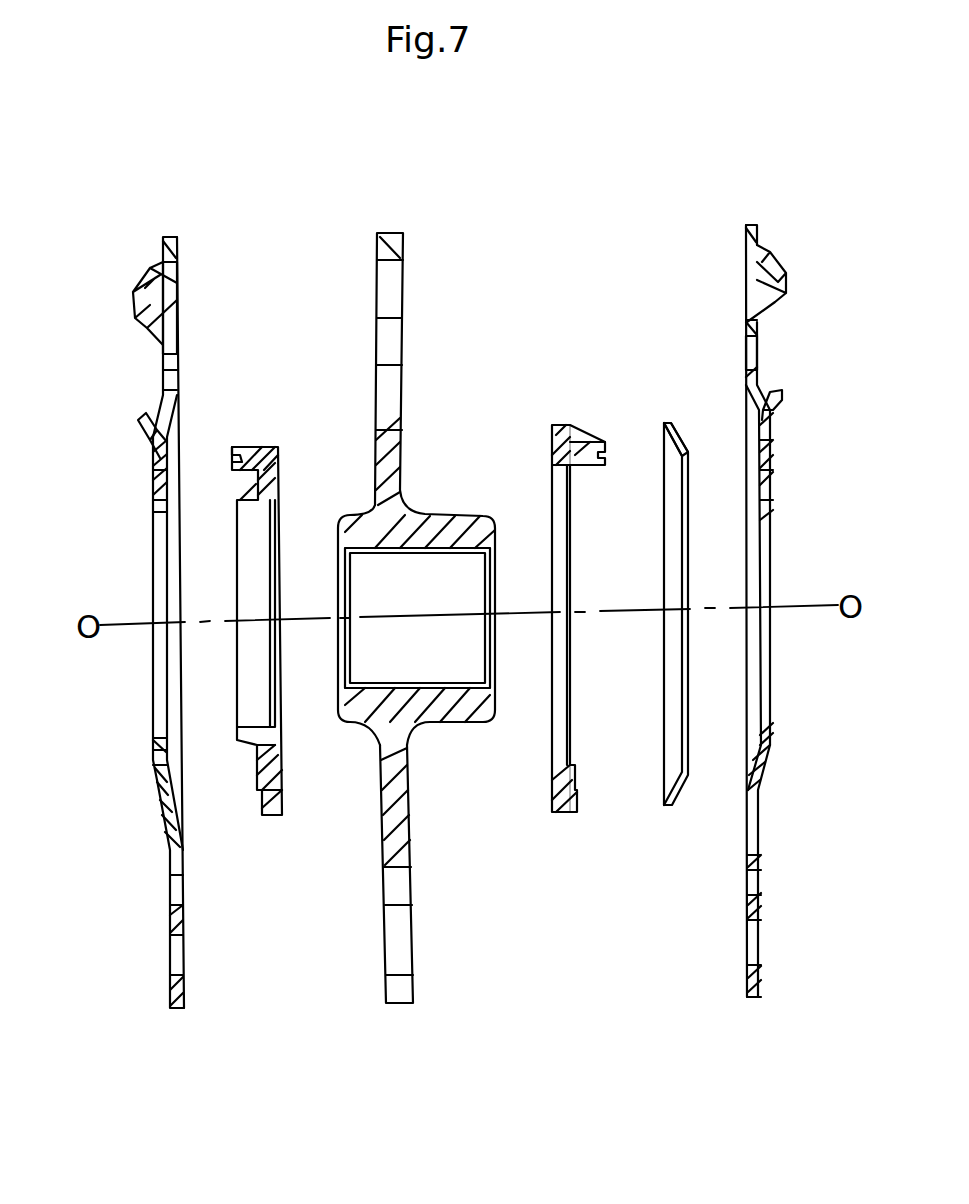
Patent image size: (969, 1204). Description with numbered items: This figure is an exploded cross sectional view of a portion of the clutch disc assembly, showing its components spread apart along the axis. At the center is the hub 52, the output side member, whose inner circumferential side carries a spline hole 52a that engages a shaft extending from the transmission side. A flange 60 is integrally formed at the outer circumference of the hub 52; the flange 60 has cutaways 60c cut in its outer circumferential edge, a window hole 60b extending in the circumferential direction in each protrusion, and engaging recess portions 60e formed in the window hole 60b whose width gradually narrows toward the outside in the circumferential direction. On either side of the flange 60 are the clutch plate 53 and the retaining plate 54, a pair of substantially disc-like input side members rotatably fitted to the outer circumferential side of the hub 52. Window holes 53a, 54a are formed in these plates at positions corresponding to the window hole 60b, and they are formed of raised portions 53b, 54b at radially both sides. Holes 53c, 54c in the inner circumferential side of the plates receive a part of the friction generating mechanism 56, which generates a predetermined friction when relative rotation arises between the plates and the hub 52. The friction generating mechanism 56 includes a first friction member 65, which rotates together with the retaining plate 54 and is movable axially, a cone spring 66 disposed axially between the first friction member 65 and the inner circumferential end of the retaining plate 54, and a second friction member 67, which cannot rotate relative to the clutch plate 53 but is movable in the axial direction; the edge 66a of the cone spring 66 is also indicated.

The hub 52 is at (458, 278).
The spline hole 52a is at (430, 552).
The clutch plate 53 is at (138, 235).
The window hole 53a is at (158, 352).
The raised portion 53b is at (135, 300).
The hole 53c is at (150, 478).
The retaining plate 54 is at (800, 218).
The window hole 54a is at (765, 333).
The raised portion 54b is at (788, 290).
The hole 54c is at (770, 442).
The friction generating mechanism 56 is at (625, 230).
The flange 60 is at (431, 618).
The window hole 60b is at (395, 270).
The cutaway 60c is at (395, 940).
The engaging recess portion 60e is at (395, 343).
The first friction member 65 is at (566, 335).
The cone spring 66 is at (668, 335).
The plate edge 66a is at (677, 428).
The second friction member 67 is at (252, 405).